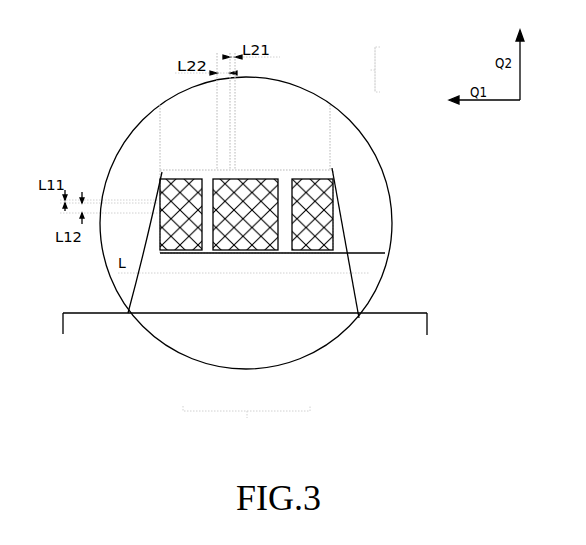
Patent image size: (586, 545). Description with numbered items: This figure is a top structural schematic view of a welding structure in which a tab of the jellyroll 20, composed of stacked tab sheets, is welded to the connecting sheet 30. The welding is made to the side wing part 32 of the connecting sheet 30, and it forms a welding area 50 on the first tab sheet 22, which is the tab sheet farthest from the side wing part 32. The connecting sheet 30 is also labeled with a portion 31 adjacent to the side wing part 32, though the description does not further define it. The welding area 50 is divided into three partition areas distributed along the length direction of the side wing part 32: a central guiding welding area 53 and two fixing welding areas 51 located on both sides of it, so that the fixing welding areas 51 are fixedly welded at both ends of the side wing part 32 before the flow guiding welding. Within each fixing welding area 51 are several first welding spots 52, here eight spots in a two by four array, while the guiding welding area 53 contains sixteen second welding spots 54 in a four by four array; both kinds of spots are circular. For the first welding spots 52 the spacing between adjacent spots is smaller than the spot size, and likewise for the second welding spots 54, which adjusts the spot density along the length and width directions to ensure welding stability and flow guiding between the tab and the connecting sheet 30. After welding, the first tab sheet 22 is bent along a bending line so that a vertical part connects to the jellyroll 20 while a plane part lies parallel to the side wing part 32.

The jellyroll 20 is at (396, 328).
The first tab sheet 22 is at (331, 262).
The connecting sheet 30 is at (363, 69).
The body portion 31 is at (360, 164).
The side wing part 32 is at (252, 180).
The welding area 50 is at (246, 310).
The fixing welding area 51 is at (185, 250).
The first welding spot 52 is at (176, 200).
The guiding welding area 53 is at (265, 250).
The second welding spot 54 is at (272, 180).